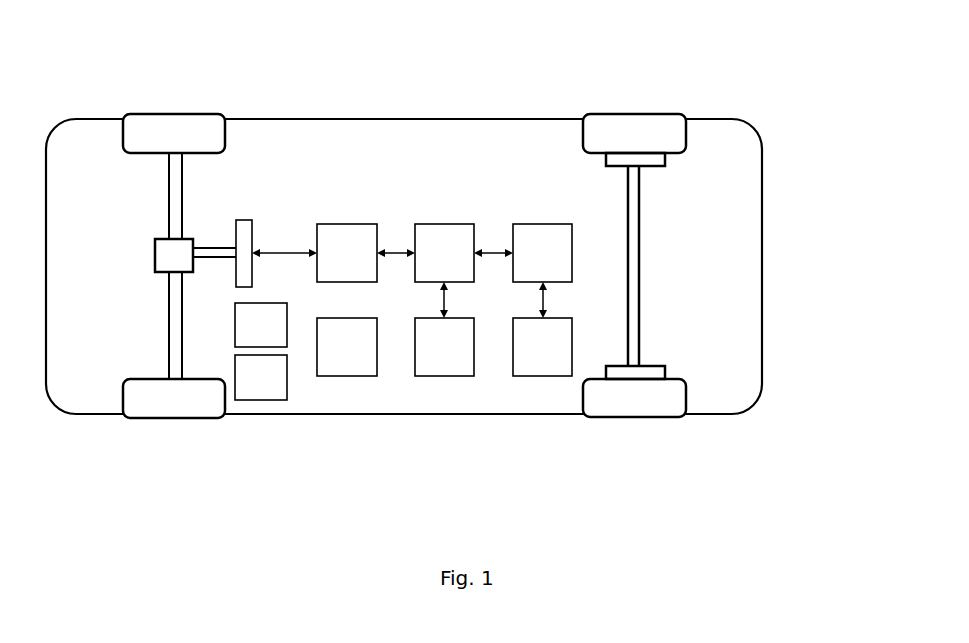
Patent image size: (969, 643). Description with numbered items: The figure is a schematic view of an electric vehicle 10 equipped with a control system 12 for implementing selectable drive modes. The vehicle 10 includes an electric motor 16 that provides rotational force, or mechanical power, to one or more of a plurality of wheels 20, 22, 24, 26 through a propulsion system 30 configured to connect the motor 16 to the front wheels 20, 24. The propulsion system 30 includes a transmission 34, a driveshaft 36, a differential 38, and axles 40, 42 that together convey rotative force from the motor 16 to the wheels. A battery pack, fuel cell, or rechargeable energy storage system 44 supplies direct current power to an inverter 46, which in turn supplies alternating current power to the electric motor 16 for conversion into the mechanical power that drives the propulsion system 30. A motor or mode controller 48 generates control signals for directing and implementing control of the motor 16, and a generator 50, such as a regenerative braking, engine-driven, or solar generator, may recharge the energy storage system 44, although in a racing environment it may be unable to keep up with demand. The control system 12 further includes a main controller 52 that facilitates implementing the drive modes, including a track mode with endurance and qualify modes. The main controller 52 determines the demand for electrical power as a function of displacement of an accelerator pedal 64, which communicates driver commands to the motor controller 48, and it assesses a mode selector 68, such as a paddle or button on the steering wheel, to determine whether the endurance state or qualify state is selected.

The electric vehicle 10 is at (792, 30).
The control system 12 is at (439, 136).
The electric motor 16 is at (347, 253).
The front wheel 20 is at (205, 113).
The wheel 22 is at (652, 113).
The front wheel 24 is at (204, 421).
The wheel 26 is at (652, 421).
The propulsion system 30 is at (229, 189).
The transmission 34 is at (253, 226).
The driveshaft 36 is at (200, 247).
The differential 38 is at (155, 251).
The axle 40 is at (169, 200).
The axle 42 is at (169, 310).
The rechargeable energy storage system 44 is at (542, 253).
The inverter 46 is at (444, 253).
The motor controller 48 is at (444, 347).
The generator 50 is at (542, 347).
The main controller 52 is at (347, 347).
The accelerator pedal 64 is at (261, 325).
The mode selector 68 is at (261, 377).